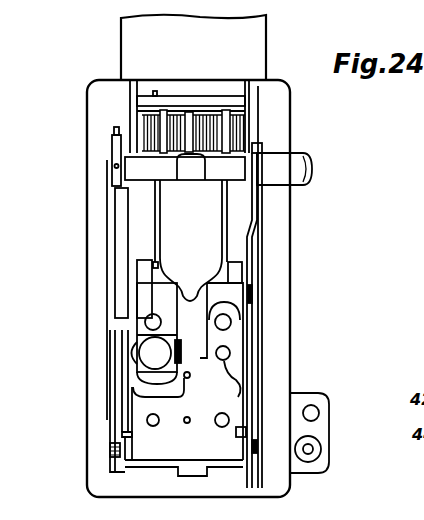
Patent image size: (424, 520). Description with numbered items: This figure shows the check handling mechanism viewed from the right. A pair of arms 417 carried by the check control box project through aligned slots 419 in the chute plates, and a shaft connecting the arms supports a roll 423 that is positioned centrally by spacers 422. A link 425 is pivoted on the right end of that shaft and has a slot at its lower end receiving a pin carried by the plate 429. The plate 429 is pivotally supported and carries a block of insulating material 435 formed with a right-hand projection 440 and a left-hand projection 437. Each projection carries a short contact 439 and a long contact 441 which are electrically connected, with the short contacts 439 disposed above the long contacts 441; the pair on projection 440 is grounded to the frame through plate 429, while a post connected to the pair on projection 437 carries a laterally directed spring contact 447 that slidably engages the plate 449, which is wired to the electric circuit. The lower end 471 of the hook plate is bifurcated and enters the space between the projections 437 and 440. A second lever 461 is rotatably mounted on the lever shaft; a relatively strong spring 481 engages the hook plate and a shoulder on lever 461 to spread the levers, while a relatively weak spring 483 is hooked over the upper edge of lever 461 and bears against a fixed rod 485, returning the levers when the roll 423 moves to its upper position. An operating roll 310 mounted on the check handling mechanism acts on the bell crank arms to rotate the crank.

The fixed rod 485 is at (190, 100).
The relatively weak spring 483 is at (158, 128).
The relatively strong spring 481 is at (238, 130).
The arms 417 is at (263, 148).
The operating roll 310 is at (300, 166).
The roll 423 is at (194, 175).
The spacers 422 is at (218, 176).
The second lever 461 is at (197, 241).
The aligned slots 419 is at (117, 260).
The right-hand projection 440 is at (233, 293).
The short contact 439 is at (143, 322).
The link 425 is at (258, 330).
The left-hand projection 437 is at (137, 292).
The spring contact 447 is at (130, 365).
The plate 449 is at (132, 388).
The block of insulating material 435 is at (122, 400).
The lower end of plate 467 471 is at (190, 390).
The long contact 441 is at (240, 376).
The plate 429 is at (228, 433).